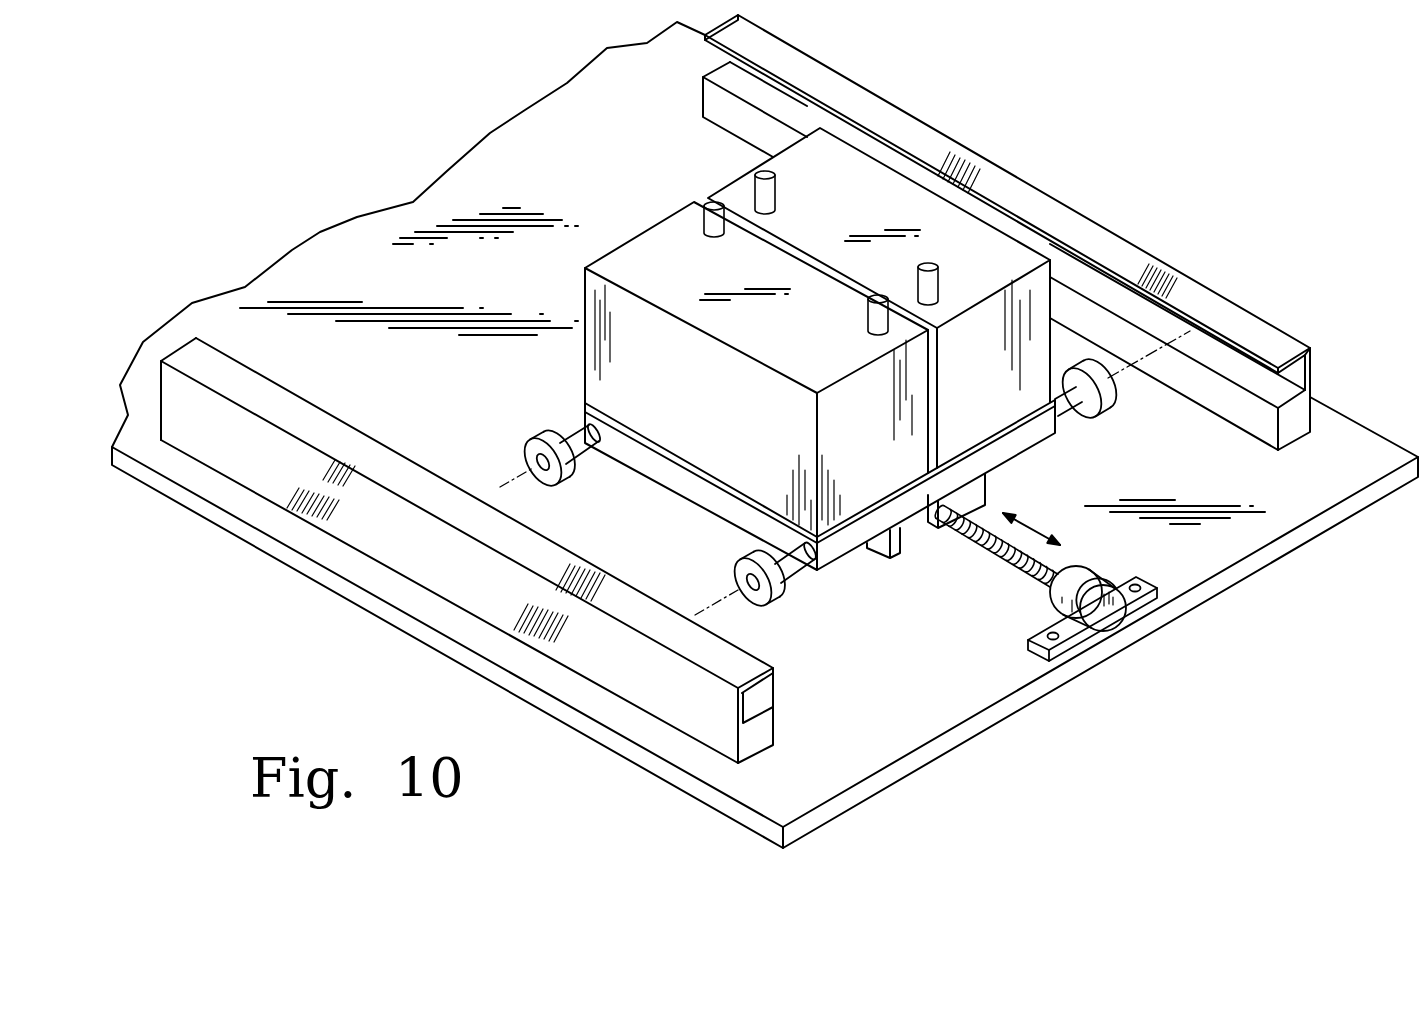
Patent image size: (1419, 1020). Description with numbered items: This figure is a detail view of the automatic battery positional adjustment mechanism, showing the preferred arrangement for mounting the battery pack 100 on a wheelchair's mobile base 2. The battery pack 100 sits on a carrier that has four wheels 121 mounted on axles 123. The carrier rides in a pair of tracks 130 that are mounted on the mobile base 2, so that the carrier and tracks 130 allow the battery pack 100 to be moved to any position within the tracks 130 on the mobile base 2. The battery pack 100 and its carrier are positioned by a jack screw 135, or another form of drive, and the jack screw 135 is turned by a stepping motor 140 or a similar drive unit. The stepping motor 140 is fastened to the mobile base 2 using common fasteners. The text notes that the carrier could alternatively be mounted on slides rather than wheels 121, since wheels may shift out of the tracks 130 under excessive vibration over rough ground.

The mobile base 2 is at (856, 738).
The battery pack 100 is at (647, 231).
The wheels 121 is at (537, 437).
The axles 123 is at (573, 430).
The tracks 130 is at (840, 87).
The jack screw 135 is at (982, 552).
The stepping motor 140 is at (1107, 613).